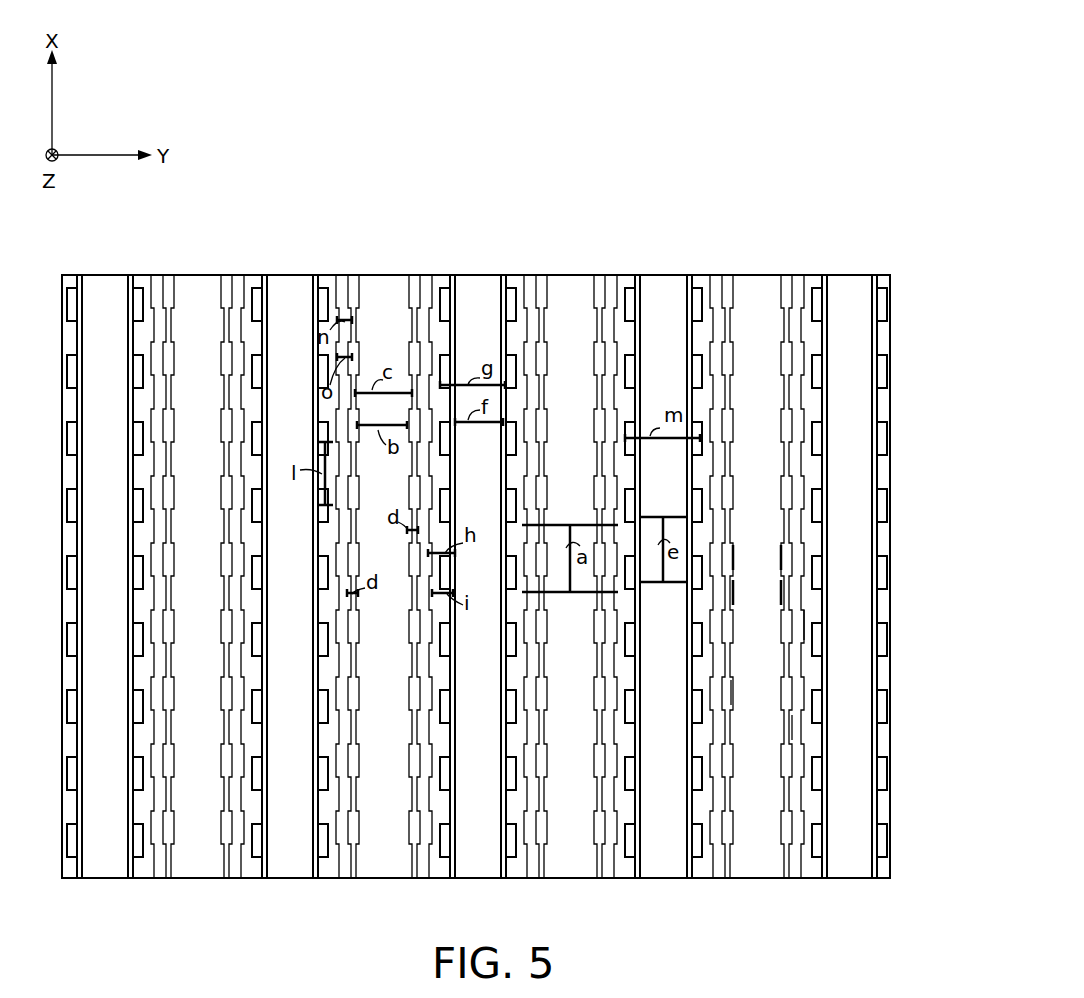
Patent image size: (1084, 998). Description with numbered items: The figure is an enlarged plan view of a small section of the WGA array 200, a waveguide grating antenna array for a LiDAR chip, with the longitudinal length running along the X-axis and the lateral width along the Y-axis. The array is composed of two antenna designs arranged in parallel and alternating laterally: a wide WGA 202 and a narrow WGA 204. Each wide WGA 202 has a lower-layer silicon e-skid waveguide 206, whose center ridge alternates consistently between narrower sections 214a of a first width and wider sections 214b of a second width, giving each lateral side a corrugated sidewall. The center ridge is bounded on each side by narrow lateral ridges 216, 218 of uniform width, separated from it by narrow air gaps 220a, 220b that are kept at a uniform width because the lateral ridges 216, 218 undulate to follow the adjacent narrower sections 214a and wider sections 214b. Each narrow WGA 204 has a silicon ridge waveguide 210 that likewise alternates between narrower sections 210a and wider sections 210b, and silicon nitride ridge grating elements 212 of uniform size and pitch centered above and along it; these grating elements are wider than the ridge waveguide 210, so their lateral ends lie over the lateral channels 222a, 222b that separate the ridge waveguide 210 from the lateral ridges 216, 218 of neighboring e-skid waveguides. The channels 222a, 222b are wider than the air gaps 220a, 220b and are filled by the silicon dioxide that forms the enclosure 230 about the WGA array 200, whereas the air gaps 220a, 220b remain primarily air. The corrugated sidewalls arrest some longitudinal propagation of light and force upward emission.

The WGA array 200 is at (878, 122).
The wide WGA 202 is at (758, 266).
The narrow WGA 204 is at (848, 266).
The e-skid waveguide 206 is at (807, 530).
The ridge waveguide 210 is at (868, 342).
The narrower sections of ridge waveguide 210a is at (460, 378).
The wider sections of ridge waveguide 210b is at (503, 405).
The ridge grating elements 212 is at (884, 300).
The narrower sections of center ridge 214a is at (390, 417).
The wider sections of center ridge 214b is at (373, 388).
The lateral ridge 216 is at (718, 661).
The lateral ridge 218 is at (805, 626).
The air gap 220a is at (747, 692).
The air gap 220b is at (802, 727).
The lateral channel 222a is at (517, 266).
The lateral channel 222b is at (625, 266).
The enclosure 230 is at (150, 273).